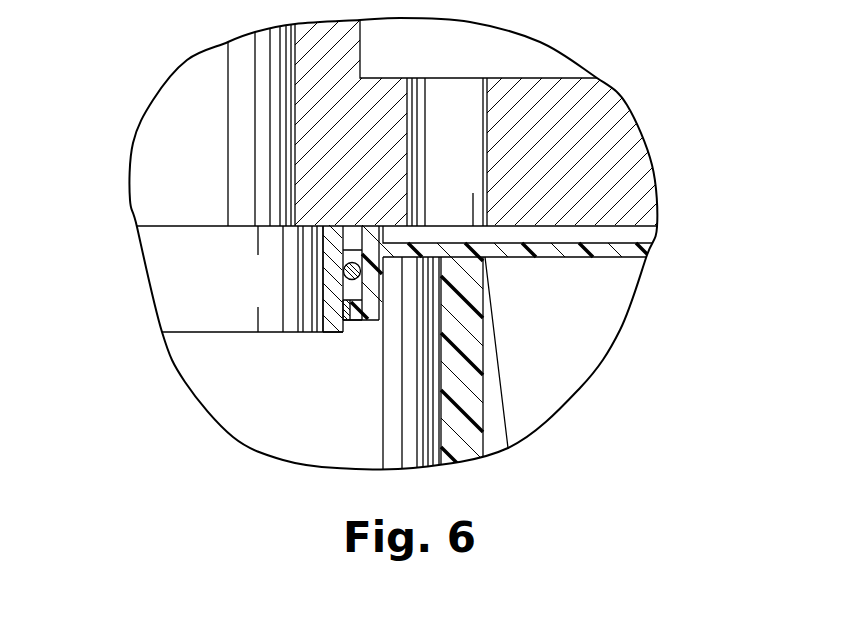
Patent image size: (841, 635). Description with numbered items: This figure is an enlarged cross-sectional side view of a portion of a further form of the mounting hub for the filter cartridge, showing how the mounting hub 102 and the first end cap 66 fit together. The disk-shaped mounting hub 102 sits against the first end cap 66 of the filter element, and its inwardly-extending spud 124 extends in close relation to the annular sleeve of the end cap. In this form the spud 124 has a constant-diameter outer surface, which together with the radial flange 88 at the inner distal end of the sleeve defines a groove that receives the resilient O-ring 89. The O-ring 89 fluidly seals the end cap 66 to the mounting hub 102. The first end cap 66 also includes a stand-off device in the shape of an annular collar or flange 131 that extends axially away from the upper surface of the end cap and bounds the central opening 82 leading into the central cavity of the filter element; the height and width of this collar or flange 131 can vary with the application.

The mounting hub 102 is at (615, 143).
The first end cap 66 is at (546, 250).
The annular collar or flange 131 is at (323, 226).
The O-ring 89 is at (367, 233).
The central opening 82 is at (343, 268).
The radial flange 88 is at (364, 318).
The spud 124 is at (338, 321).